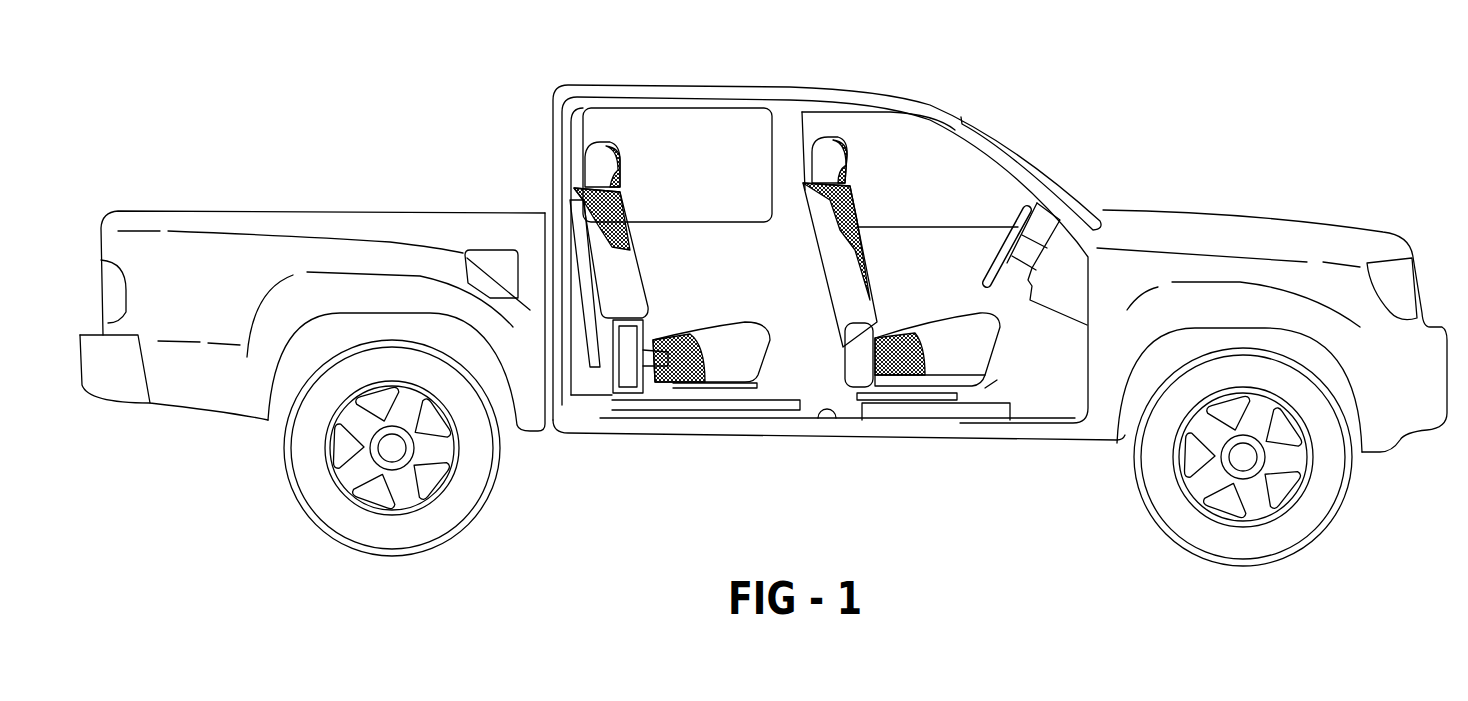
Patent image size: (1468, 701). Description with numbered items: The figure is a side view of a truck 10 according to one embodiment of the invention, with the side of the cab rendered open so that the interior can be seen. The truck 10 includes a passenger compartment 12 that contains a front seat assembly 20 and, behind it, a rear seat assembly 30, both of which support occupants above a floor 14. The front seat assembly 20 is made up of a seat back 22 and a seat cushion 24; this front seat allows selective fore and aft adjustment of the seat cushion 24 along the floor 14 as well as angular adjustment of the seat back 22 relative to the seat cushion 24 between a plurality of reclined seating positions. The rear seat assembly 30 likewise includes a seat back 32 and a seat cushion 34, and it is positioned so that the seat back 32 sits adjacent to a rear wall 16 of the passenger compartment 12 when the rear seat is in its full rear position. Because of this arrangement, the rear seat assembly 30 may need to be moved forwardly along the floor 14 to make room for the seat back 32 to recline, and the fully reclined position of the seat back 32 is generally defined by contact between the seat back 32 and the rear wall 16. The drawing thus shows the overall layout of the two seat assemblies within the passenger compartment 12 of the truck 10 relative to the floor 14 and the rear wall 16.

The truck 10 is at (1044, 114).
The passenger compartment 12 is at (917, 140).
The floor 14 is at (835, 405).
The rear wall 16 is at (568, 150).
The front seat assembly 20 is at (835, 135).
The seat back 22 is at (853, 270).
The seat cushion 24 is at (937, 337).
The rear seat assembly 30 is at (602, 142).
The seat back 32 is at (642, 276).
The seat cushion 34 is at (712, 340).